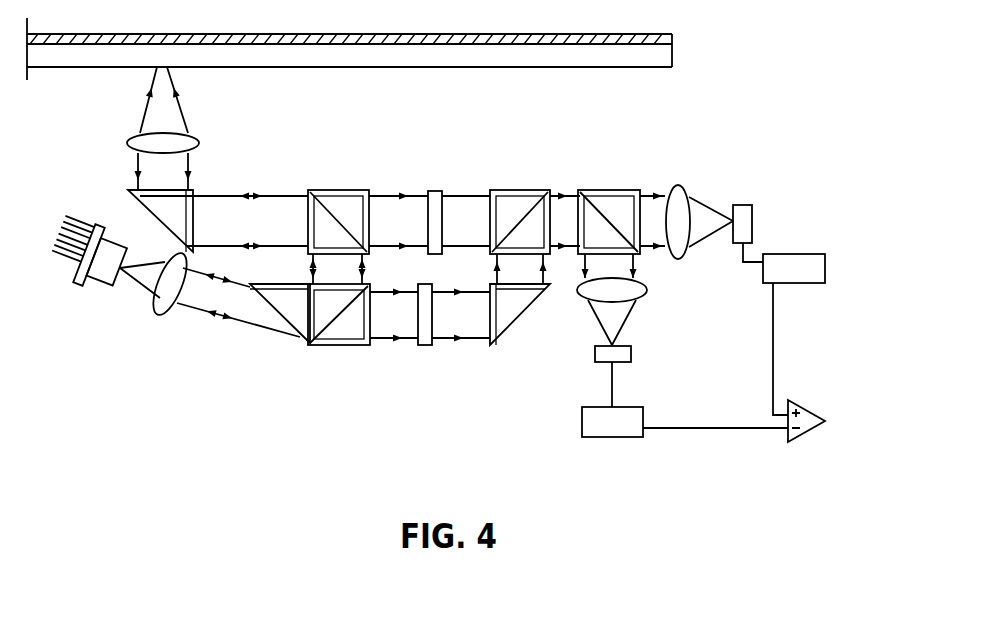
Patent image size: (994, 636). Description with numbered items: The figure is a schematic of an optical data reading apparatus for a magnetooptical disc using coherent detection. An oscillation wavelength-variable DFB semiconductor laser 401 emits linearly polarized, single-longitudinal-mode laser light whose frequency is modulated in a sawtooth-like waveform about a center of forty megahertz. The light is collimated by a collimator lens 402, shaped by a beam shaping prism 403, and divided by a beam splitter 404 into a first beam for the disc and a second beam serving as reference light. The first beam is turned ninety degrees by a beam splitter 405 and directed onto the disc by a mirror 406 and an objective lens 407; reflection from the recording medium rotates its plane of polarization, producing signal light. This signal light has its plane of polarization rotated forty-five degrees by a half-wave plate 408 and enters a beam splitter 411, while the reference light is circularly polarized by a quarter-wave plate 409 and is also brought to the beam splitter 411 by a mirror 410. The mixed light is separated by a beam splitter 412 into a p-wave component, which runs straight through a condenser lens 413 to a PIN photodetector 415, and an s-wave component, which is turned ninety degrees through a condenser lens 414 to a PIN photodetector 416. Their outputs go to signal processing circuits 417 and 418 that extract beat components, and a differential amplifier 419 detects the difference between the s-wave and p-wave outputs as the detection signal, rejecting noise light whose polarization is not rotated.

The oscillation wavelength-variable DFB semiconductor laser 401 is at (76, 290).
The collimator lens 402 is at (165, 310).
The beam shaping prism 403 is at (275, 316).
The beam splitter 404 is at (343, 347).
The beam splitter 405 is at (333, 190).
The mirror 406 is at (196, 190).
The objective lens 407 is at (195, 137).
The λ/2 plate 408 is at (440, 191).
The λ/4 plate 409 is at (425, 347).
The mirror 410 is at (513, 328).
The beam splitter 411 is at (540, 190).
The beam splitter 412 is at (608, 190).
The condenser lens 413 is at (680, 186).
The condenser lens 414 is at (646, 291).
The PIN photodetector 415 is at (750, 205).
The PIN photodetector 416 is at (632, 354).
The signal processing circuit 417 is at (803, 284).
The signal processing circuit 418 is at (625, 438).
The differential amplifier 419 is at (810, 405).